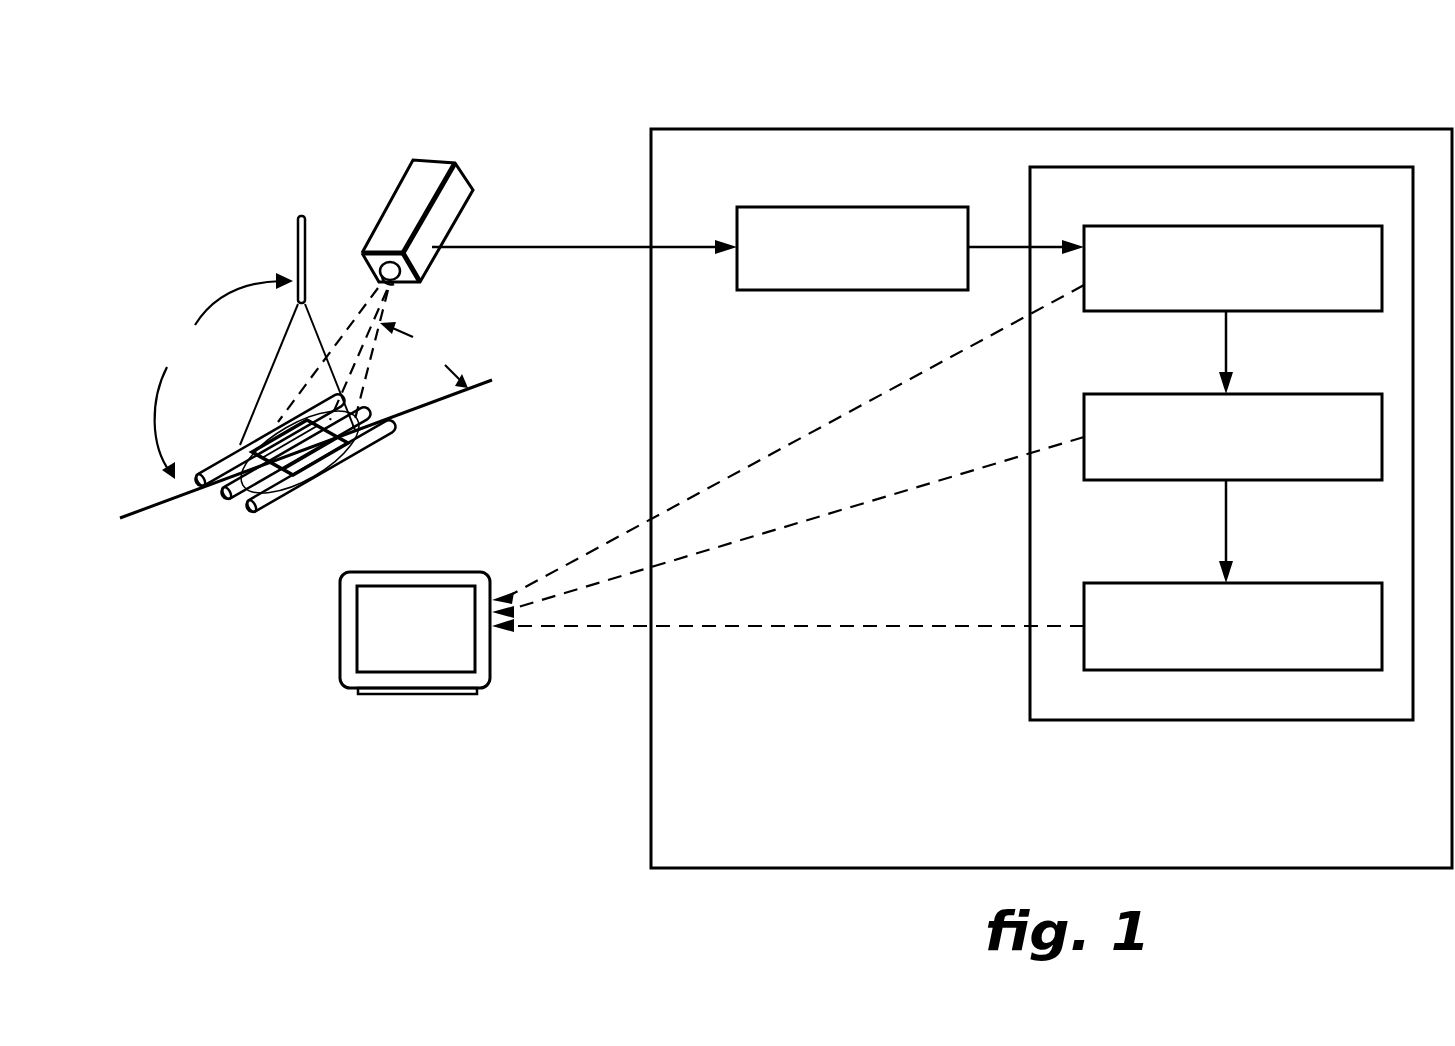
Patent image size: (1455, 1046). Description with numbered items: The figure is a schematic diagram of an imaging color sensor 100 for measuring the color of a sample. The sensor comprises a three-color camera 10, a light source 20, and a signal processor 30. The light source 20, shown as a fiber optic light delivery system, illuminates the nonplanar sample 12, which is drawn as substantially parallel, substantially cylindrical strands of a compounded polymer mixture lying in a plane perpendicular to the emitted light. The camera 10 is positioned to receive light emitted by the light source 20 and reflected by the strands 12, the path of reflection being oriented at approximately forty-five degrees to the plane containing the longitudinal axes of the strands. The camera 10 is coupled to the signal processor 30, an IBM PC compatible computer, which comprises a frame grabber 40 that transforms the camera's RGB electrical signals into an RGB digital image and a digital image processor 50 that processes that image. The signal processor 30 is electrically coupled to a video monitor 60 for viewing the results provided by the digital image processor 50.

The imaging color sensor 100 is at (282, 130).
The three-color camera 10 is at (463, 174).
The light source 20 is at (292, 260).
The nonplanar sample 12 is at (270, 505).
The signal processor 30 is at (651, 421).
The frame grabber 40 is at (863, 207).
The digital image processor 50 is at (1030, 527).
The video monitor 60 is at (413, 572).